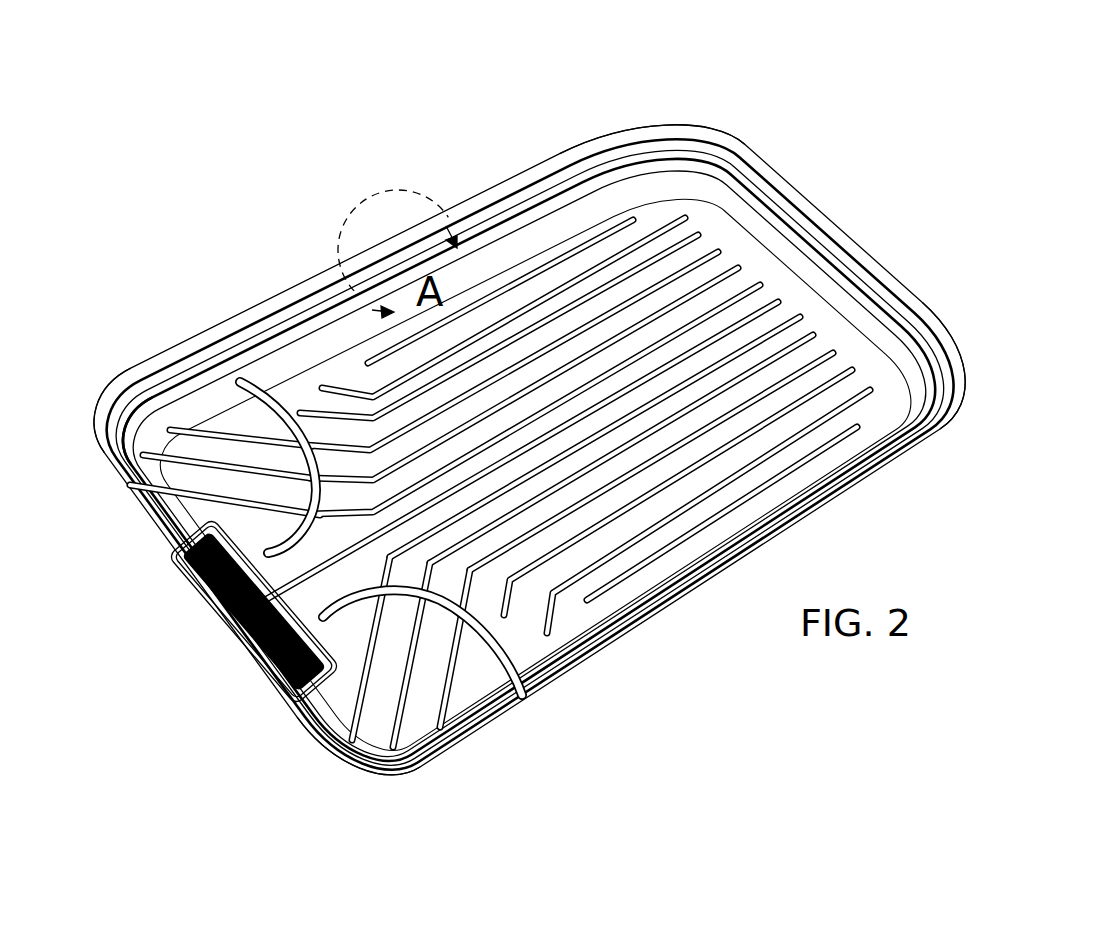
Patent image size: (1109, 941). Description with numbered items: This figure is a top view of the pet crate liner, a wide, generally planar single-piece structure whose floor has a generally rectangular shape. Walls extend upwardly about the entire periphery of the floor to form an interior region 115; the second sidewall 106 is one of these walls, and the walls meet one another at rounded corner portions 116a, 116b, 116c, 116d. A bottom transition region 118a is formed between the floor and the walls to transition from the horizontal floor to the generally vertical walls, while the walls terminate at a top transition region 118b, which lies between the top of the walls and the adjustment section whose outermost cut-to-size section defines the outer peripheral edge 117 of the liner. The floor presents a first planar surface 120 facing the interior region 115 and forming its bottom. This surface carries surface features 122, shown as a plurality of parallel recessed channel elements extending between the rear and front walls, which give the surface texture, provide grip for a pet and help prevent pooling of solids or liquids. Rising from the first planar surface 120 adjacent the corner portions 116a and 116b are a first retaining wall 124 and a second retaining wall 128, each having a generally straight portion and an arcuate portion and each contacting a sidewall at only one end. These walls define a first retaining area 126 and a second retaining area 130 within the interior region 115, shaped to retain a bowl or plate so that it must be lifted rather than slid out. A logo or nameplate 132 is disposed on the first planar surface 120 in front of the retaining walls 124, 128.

The second sidewall 106 is at (300, 298).
The interior region 115 is at (535, 474).
The outer peripheral edge 117 is at (567, 145).
The bottom transition region 118a is at (520, 250).
The top transition region 118b is at (120, 477).
The rounded corner portion 116a is at (380, 763).
The rounded corner portion 116b is at (97, 398).
The rounded corner portion 116c is at (677, 117).
The rounded corner portion 116d is at (958, 363).
The first planar surface 120 is at (578, 623).
The surface features 122 is at (858, 368).
The first retaining wall 124 is at (455, 638).
The first retaining area 126 is at (420, 717).
The second retaining wall 128 is at (245, 378).
The second retaining area 130 is at (202, 478).
The logo or nameplate 132 is at (233, 613).